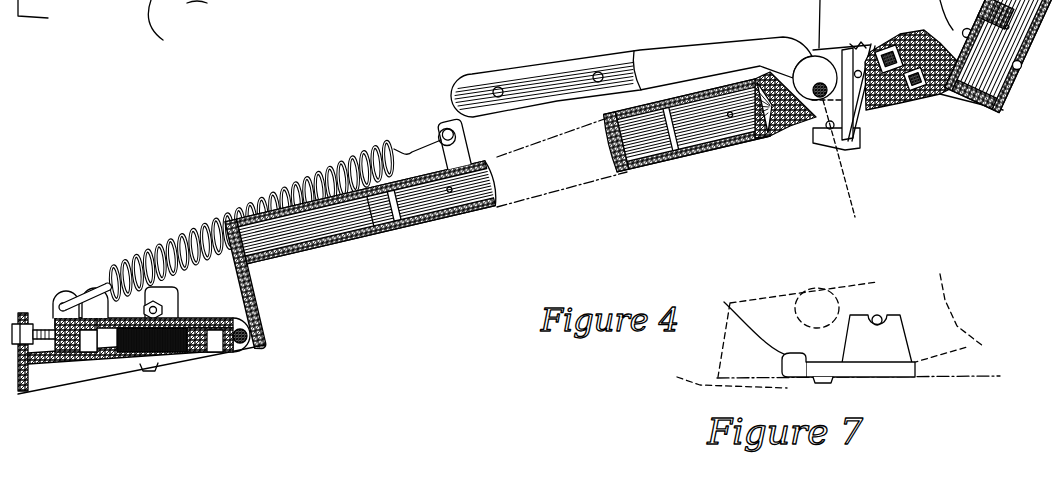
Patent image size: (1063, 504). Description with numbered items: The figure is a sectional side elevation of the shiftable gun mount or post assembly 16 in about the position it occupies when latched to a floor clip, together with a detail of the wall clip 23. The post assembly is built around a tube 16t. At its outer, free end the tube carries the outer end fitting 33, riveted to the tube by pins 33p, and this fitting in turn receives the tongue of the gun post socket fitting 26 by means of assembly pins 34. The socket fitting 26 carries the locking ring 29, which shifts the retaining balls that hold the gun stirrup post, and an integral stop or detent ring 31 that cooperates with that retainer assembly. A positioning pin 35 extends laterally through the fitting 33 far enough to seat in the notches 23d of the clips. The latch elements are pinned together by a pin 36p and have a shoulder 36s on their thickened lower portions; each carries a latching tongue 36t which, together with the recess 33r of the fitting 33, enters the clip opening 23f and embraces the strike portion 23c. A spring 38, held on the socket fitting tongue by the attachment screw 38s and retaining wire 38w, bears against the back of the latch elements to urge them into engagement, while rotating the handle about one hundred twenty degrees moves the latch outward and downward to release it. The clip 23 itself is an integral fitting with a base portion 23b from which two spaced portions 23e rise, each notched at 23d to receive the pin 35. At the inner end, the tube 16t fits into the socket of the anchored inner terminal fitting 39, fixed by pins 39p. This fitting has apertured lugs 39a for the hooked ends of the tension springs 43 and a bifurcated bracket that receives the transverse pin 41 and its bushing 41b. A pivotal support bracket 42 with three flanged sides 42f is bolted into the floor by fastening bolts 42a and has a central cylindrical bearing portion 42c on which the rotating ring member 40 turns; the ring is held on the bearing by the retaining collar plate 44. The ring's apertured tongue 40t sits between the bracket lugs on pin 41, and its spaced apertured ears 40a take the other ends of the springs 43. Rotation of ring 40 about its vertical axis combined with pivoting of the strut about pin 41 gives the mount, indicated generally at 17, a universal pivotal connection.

In FIG. 4, the gun post assembly 16 is at (560, 199).
In FIG. 4, the tube 16t is at (613, 141).
In FIG. 4, the base assembly 17 is at (172, 380).
In FIG. 7, the wall clip 23 is at (912, 300).
In FIG. 7, the base portion 23b is at (913, 364).
In FIG. 7, the strike portion 23c is at (751, 333).
In FIG. 7, the notch 23d is at (852, 325).
In FIG. 7, the spaced portions 23e is at (893, 336).
In FIG. 7, the opening 23f is at (833, 382).
In FIG. 4, the gun post socket fitting 26 is at (1008, 100).
In FIG. 4, the locking ring 29 is at (1027, 32).
In FIG. 4, the stop or detent ring 31 is at (952, 100).
In FIG. 4, the tube end fitting 33 is at (712, 160).
In FIG. 7, the tube end fitting 33 is at (745, 350).
In FIG. 4, the pins 33p is at (685, 165).
In FIG. 4, the recess 33r is at (800, 135).
In FIG. 4, the assembly pins 34 is at (915, 105).
In FIG. 4, the positioning pin 35 is at (888, 112).
In FIG. 7, the positioning pin 35 is at (880, 322).
In FIG. 4, the pin 36p is at (850, 162).
In FIG. 4, the shoulder 36s is at (848, 170).
In FIG. 4, the latching tongue 36t is at (822, 165).
In FIG. 7, the latching tongue 36t is at (700, 386).
In FIG. 4, the spring 38 is at (852, 128).
In FIG. 4, the attachment screw 38s is at (880, 46).
In FIG. 4, the retaining wire 38w is at (851, 44).
In FIG. 4, the inner terminal fitting 39 is at (372, 255).
In FIG. 4, the apertured ears or lugs 39a is at (440, 135).
In FIG. 4, the pins 39p is at (449, 193).
In FIG. 4, the rotating ring member 40 is at (52, 318).
In FIG. 4, the apertured ears 40a is at (65, 303).
In FIG. 4, the apertured tongue portion 40t is at (233, 318).
In FIG. 4, the transverse pin 41 is at (262, 343).
In FIG. 4, the bushing 41b is at (234, 350).
In FIG. 4, the pivotal support bracket 42 is at (58, 380).
In FIG. 4, the fastening bolts 42a is at (153, 304).
In FIG. 4, the central cylindrical bearing portion 42c is at (105, 342).
In FIG. 4, the flanged sides 42f is at (86, 0).
In FIG. 4, the tension springs 43 is at (314, 178).
In FIG. 4, the retaining ring or collar plate 44 is at (98, 295).